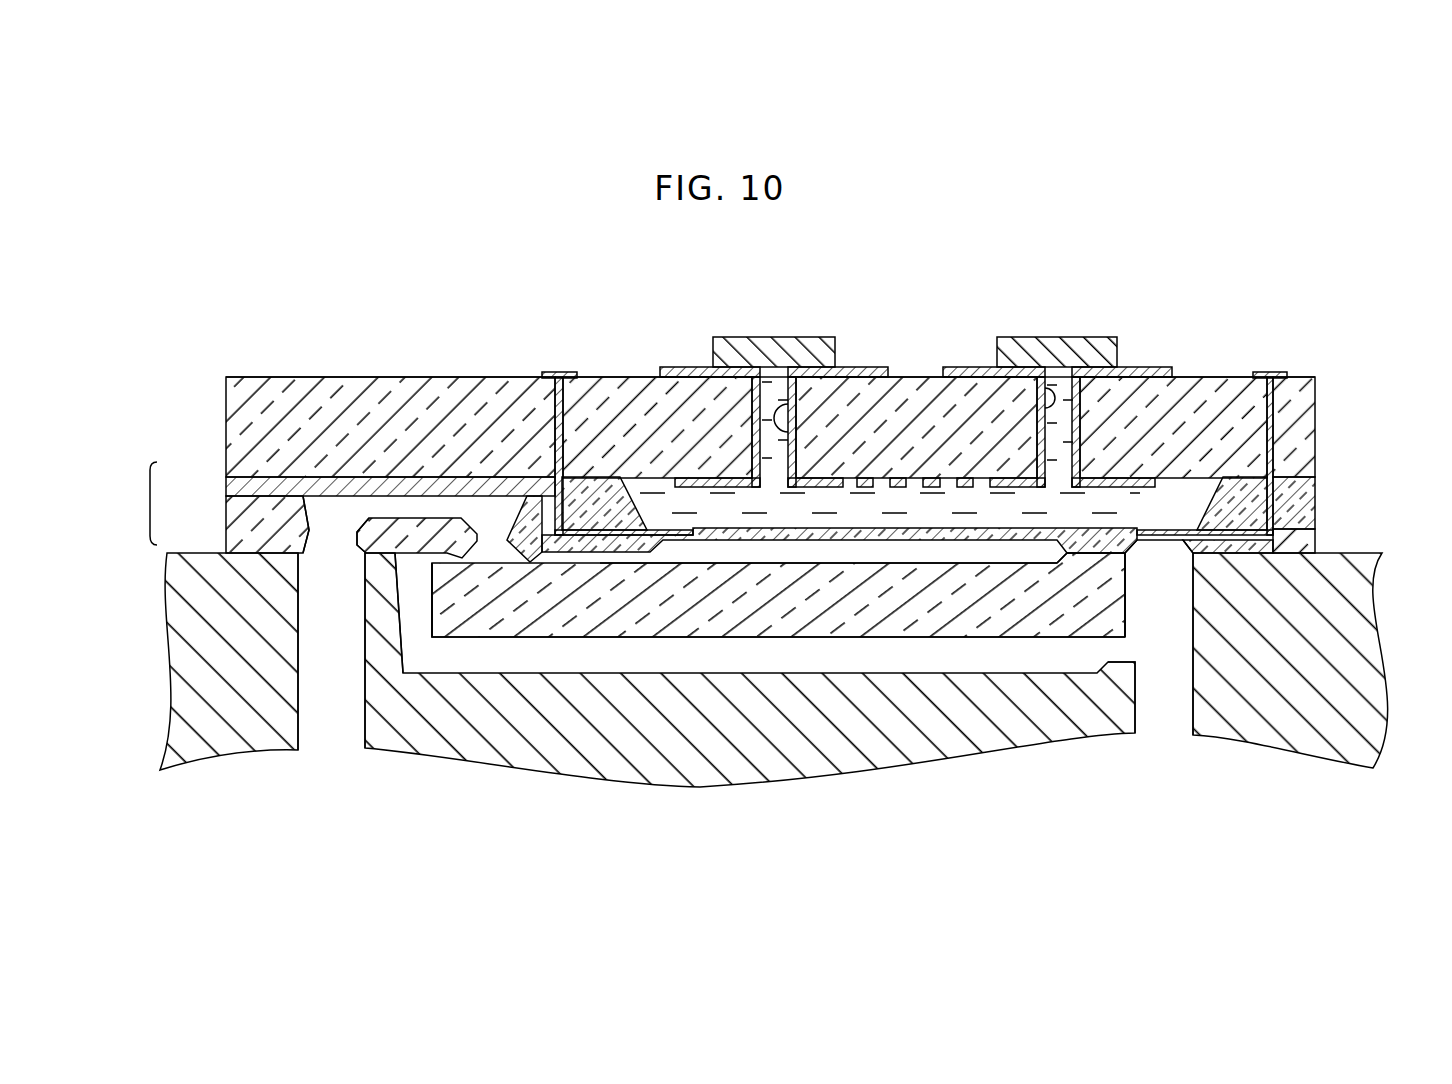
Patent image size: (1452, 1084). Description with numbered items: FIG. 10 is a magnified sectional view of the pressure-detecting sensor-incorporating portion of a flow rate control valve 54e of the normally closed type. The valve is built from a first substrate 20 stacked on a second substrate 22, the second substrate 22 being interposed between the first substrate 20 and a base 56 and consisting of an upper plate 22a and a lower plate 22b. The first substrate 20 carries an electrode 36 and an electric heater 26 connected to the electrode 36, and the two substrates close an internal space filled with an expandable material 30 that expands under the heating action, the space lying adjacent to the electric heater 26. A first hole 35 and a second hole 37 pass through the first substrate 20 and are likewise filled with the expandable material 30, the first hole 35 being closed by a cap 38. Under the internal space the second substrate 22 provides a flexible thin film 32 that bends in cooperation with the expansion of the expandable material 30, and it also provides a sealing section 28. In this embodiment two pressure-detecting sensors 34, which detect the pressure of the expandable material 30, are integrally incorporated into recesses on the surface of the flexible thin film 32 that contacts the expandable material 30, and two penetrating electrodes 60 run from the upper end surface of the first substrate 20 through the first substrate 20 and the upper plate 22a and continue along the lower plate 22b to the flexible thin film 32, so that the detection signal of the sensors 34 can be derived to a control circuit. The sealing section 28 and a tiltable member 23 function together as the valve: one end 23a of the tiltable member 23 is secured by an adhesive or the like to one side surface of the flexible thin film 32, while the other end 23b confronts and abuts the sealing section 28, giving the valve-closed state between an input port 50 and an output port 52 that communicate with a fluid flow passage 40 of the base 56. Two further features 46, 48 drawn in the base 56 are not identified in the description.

The first substrate 20 is at (252, 423).
The second substrate 22 is at (135, 503).
The upper plate 22a is at (250, 490).
The lower plate 22b is at (250, 533).
The tiltable member 23 is at (918, 637).
The one end 23a is at (1097, 600).
The other end 23b is at (480, 588).
The electric heater 26 is at (910, 487).
The sealing section 28 is at (527, 503).
The expandable material 30 is at (680, 500).
The flexible thin film 32 is at (1100, 530).
The pressure-detecting sensors 34 is at (667, 528).
The first hole 35 is at (797, 397).
The electrode 36 is at (697, 367).
The second hole 37 is at (1040, 392).
The cap 38 is at (762, 343).
The fluid flow passage 40 is at (778, 609).
The pressure introduction hole 46 is at (1167, 675).
The through hole 48 is at (332, 693).
The input port 50 is at (437, 558).
The output port 52 is at (330, 540).
The flow rate control valve 54e is at (1253, 319).
The base 56 is at (1326, 547).
The penetrating electrodes 60 is at (565, 372).